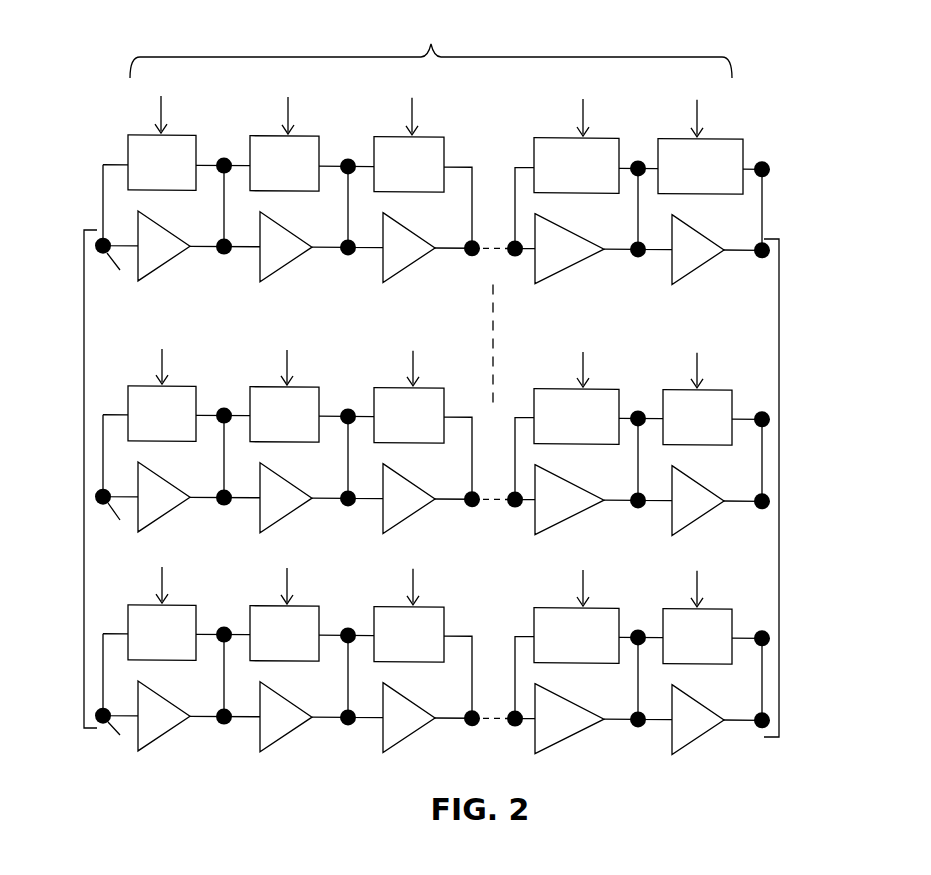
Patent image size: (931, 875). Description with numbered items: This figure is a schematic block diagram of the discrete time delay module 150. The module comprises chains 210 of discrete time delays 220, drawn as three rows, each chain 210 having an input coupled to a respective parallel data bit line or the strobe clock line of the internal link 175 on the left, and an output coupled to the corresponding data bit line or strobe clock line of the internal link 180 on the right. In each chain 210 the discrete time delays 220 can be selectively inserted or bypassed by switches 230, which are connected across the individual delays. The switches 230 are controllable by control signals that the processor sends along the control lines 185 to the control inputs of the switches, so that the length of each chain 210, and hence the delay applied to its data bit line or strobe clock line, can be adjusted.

The discrete time delay module 150 is at (811, 42).
The control lines 185 is at (431, 43).
The internal link 175 is at (84, 480).
The internal link 180 is at (779, 488).
The chains 210 is at (735, 226).
The discrete time delays 220 is at (733, 750).
The switches 230 is at (610, 610).